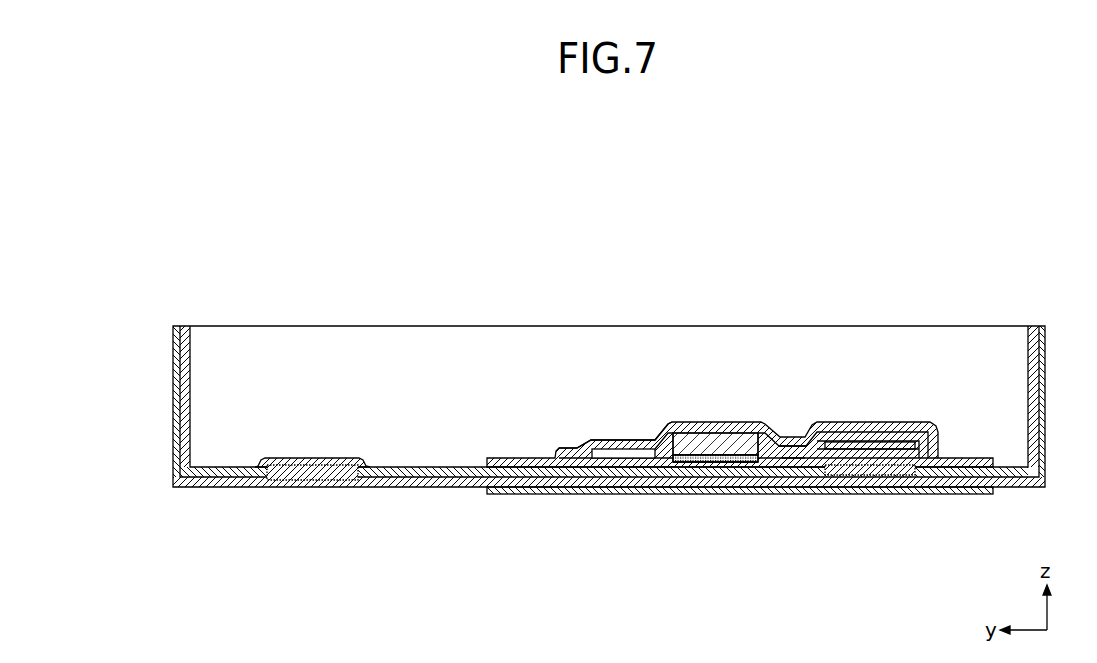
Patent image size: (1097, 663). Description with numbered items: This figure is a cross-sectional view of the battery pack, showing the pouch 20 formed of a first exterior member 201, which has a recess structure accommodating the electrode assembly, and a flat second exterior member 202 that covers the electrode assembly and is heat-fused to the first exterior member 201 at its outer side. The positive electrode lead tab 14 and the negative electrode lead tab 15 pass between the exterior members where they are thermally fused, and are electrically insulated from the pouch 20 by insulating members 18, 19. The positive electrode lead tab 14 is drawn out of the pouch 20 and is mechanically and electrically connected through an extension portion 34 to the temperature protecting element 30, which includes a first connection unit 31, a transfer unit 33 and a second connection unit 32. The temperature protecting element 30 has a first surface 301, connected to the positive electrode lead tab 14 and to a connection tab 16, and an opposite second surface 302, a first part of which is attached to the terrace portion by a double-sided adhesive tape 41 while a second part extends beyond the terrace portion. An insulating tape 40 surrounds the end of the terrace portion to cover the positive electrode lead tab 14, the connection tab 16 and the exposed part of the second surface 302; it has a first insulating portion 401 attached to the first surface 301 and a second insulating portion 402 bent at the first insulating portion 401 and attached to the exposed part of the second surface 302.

The positive electrode lead tab 14 is at (868, 449).
The negative electrode lead tab 15 is at (300, 481).
The connection tab 16 is at (613, 458).
The insulating member 18 is at (905, 476).
The insulating member 19 is at (331, 482).
The pouch 20 is at (627, 362).
The first exterior member 201 is at (1030, 372).
The second exterior member 202 is at (1046, 372).
The temperature protecting element 30 is at (752, 342).
The first connection unit 31 is at (790, 437).
The second connection unit 32 is at (633, 440).
The transfer unit 33 is at (715, 362).
The first surface 301 is at (700, 433).
The second surface 302 is at (745, 455).
The extension portion 34 is at (797, 460).
The insulating tape 40 is at (740, 484).
The first insulating portion 401 is at (580, 566).
The second insulating portion 402 is at (740, 526).
The double-sided adhesive tape 41 is at (703, 463).